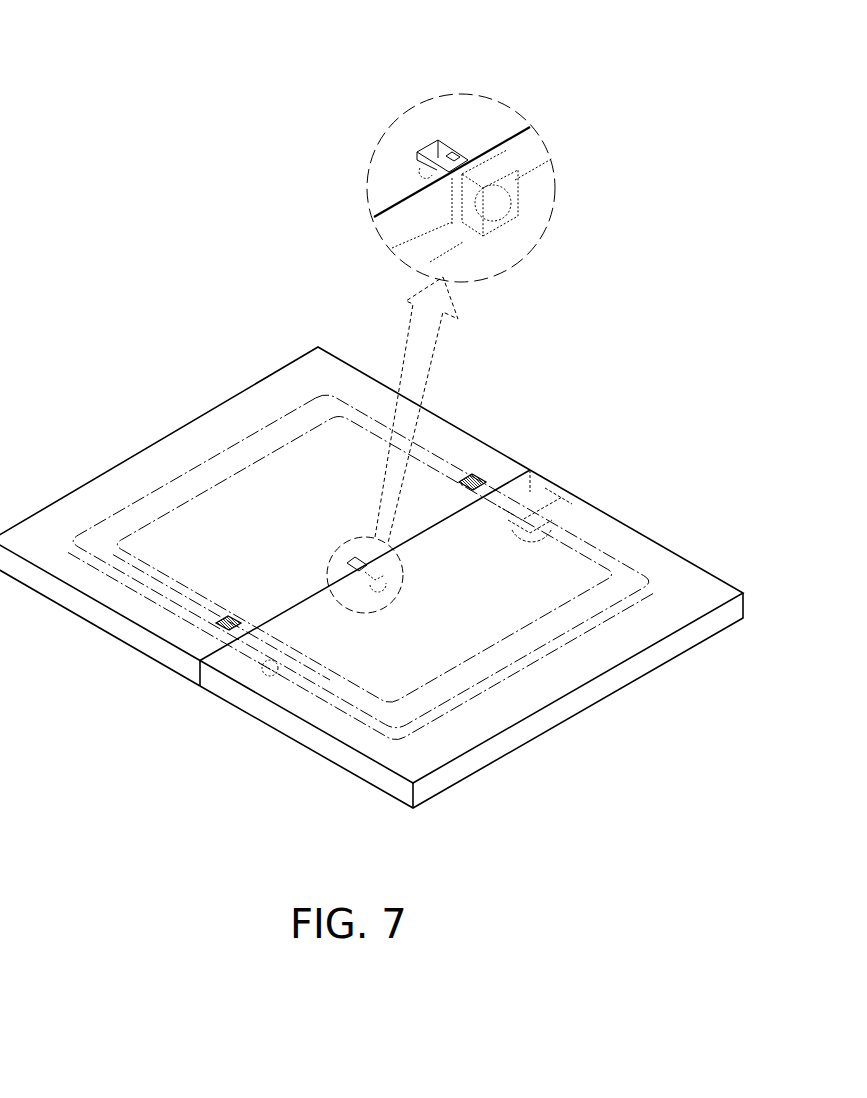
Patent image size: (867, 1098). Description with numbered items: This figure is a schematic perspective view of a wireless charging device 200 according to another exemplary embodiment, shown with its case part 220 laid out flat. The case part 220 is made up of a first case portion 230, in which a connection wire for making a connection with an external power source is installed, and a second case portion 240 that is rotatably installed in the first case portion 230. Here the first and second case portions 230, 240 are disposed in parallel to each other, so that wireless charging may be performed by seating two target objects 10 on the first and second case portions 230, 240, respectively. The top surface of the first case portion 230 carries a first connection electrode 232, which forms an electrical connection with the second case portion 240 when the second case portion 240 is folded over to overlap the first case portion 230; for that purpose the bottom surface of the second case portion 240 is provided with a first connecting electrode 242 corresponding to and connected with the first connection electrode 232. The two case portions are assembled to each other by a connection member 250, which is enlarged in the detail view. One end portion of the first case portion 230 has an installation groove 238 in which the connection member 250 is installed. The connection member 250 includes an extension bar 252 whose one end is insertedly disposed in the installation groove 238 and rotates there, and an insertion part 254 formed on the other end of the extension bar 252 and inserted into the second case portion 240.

The wireless charging device 200 is at (176, 25).
The target object to be charged 10 is at (197, 473).
The case part 220 is at (235, 813).
The first case portion 230 is at (143, 643).
The second case portion 240 is at (233, 692).
The first connection electrode 232 is at (473, 474).
The installation groove 238 is at (437, 138).
The first connecting electrode 242 is at (580, 492).
The connection member 250 is at (661, 223).
The extension bar 252 is at (500, 262).
The insertion part 254 is at (515, 205).